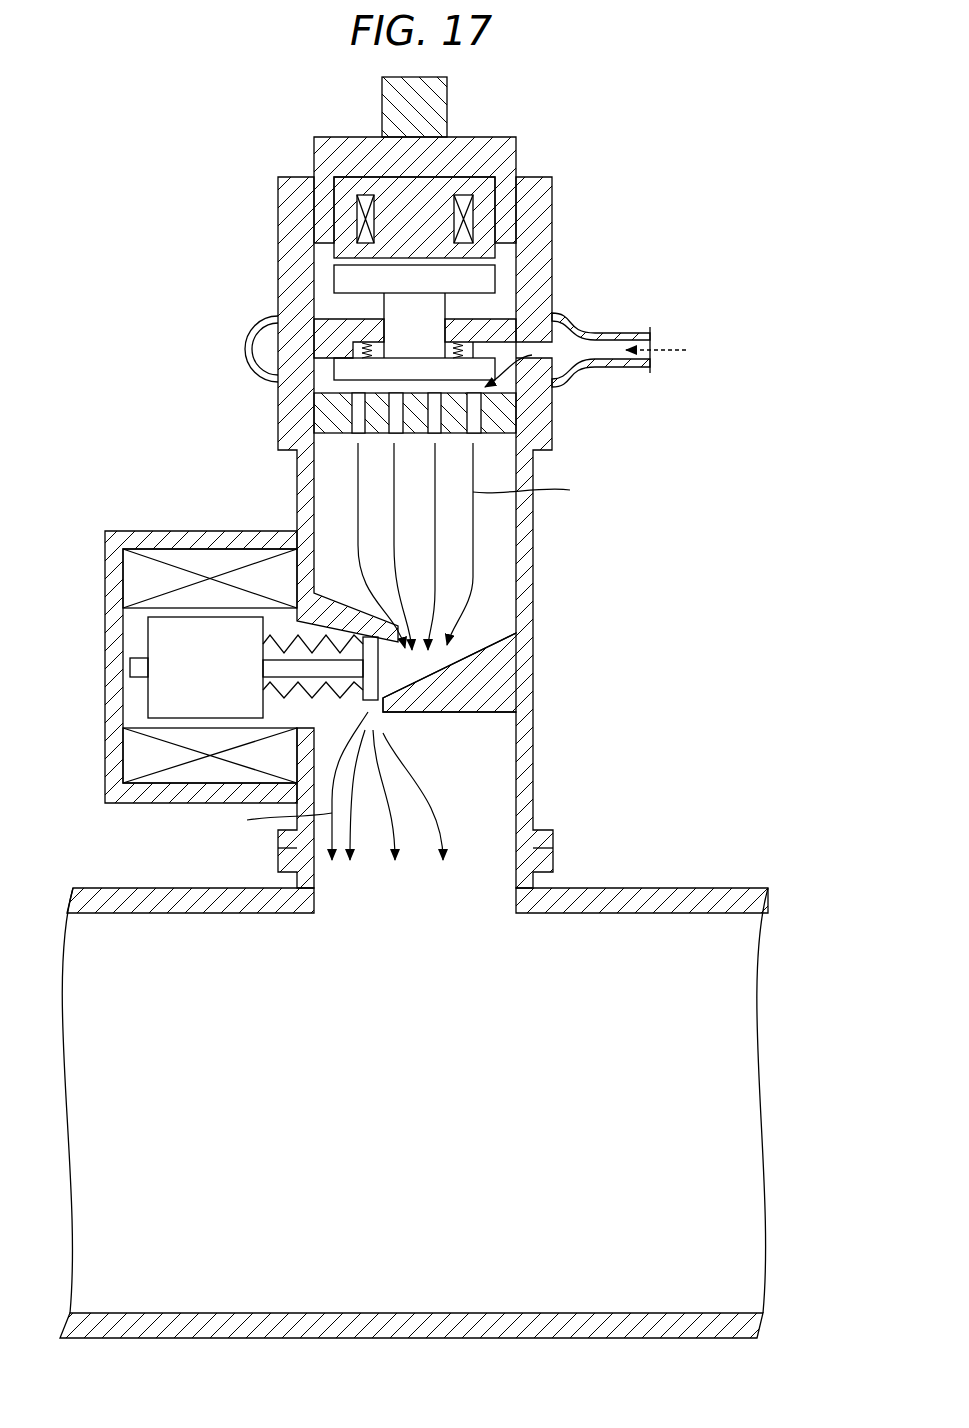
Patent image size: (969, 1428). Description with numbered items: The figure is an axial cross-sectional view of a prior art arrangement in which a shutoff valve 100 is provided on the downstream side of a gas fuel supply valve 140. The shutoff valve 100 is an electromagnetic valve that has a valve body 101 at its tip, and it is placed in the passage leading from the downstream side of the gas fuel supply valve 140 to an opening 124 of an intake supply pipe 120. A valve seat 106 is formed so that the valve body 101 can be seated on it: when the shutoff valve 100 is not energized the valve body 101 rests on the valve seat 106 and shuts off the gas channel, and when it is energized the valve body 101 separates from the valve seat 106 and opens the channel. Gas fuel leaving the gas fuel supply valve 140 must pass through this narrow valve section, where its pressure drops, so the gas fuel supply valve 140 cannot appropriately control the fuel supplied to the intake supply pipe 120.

The gas fuel supply valve 140 is at (529, 120).
The shutoff valve 100 is at (157, 498).
The valve body 101 is at (380, 676).
The valve seat 106 is at (390, 700).
The opening 124 is at (455, 888).
The intake supply pipe 120 is at (698, 902).